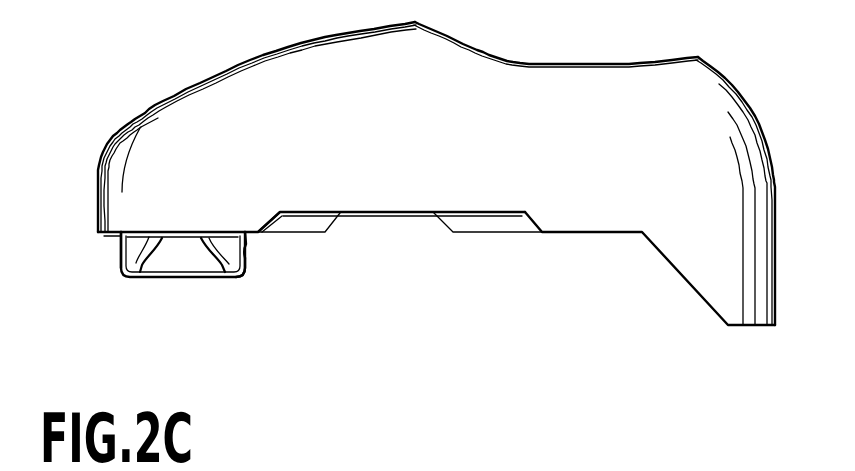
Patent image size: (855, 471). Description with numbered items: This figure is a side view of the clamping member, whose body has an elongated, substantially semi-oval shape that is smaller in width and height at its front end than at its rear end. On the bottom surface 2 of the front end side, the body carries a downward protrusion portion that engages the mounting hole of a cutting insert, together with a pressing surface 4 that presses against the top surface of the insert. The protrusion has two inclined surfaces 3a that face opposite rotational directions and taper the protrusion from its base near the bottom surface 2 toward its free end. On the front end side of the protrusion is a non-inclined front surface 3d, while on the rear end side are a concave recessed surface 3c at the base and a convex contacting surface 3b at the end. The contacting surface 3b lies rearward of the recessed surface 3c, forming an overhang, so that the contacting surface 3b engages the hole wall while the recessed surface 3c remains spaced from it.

The bottom surface 2 is at (136, 280).
The inclined surface 3a is at (180, 262).
The contacting surface 3b is at (243, 266).
The recessed surface 3c is at (246, 244).
The non-inclined front surface 3d is at (124, 259).
The pressing surface 4 is at (270, 234).